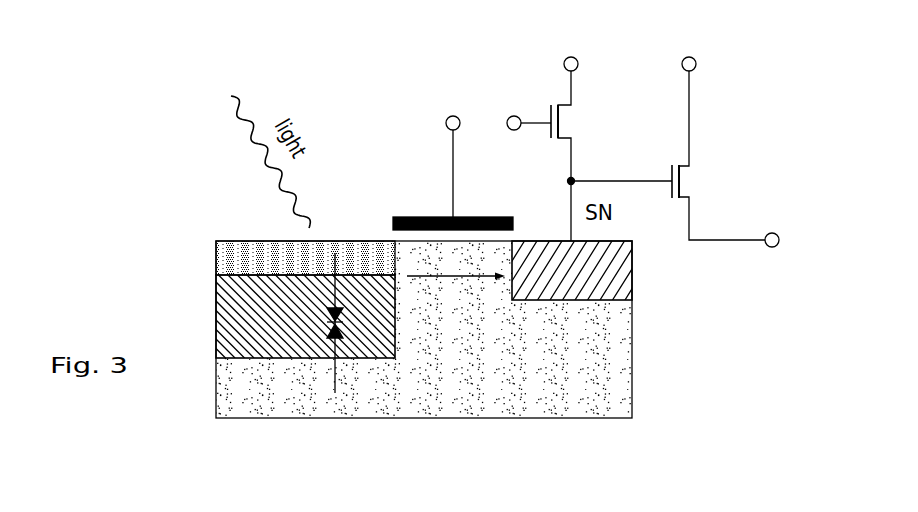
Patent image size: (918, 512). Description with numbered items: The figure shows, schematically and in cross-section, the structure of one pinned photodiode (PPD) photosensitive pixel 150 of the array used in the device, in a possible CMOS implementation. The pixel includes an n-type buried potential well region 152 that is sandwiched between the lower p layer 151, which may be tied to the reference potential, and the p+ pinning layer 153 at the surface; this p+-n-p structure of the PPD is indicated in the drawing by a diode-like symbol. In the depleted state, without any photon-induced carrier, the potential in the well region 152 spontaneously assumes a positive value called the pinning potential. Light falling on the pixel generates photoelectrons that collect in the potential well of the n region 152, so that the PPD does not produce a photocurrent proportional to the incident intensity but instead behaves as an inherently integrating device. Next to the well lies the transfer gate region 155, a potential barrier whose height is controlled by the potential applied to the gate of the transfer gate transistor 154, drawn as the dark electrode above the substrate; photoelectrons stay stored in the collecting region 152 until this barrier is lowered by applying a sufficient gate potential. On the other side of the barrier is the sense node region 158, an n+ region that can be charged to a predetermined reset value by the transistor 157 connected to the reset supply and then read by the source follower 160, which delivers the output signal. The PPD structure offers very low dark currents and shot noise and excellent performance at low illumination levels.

The pixel 150 is at (716, 280).
The lower p layer 151 is at (598, 401).
The n-type buried potential well region 152 is at (243, 328).
The p+ pinning layer 153 is at (270, 246).
The transfer gate transistor 154 is at (435, 216).
The transfer gate region 155 is at (408, 248).
The transistor 157 is at (557, 132).
The sense node region 158 is at (623, 289).
The source follower 160 is at (687, 159).